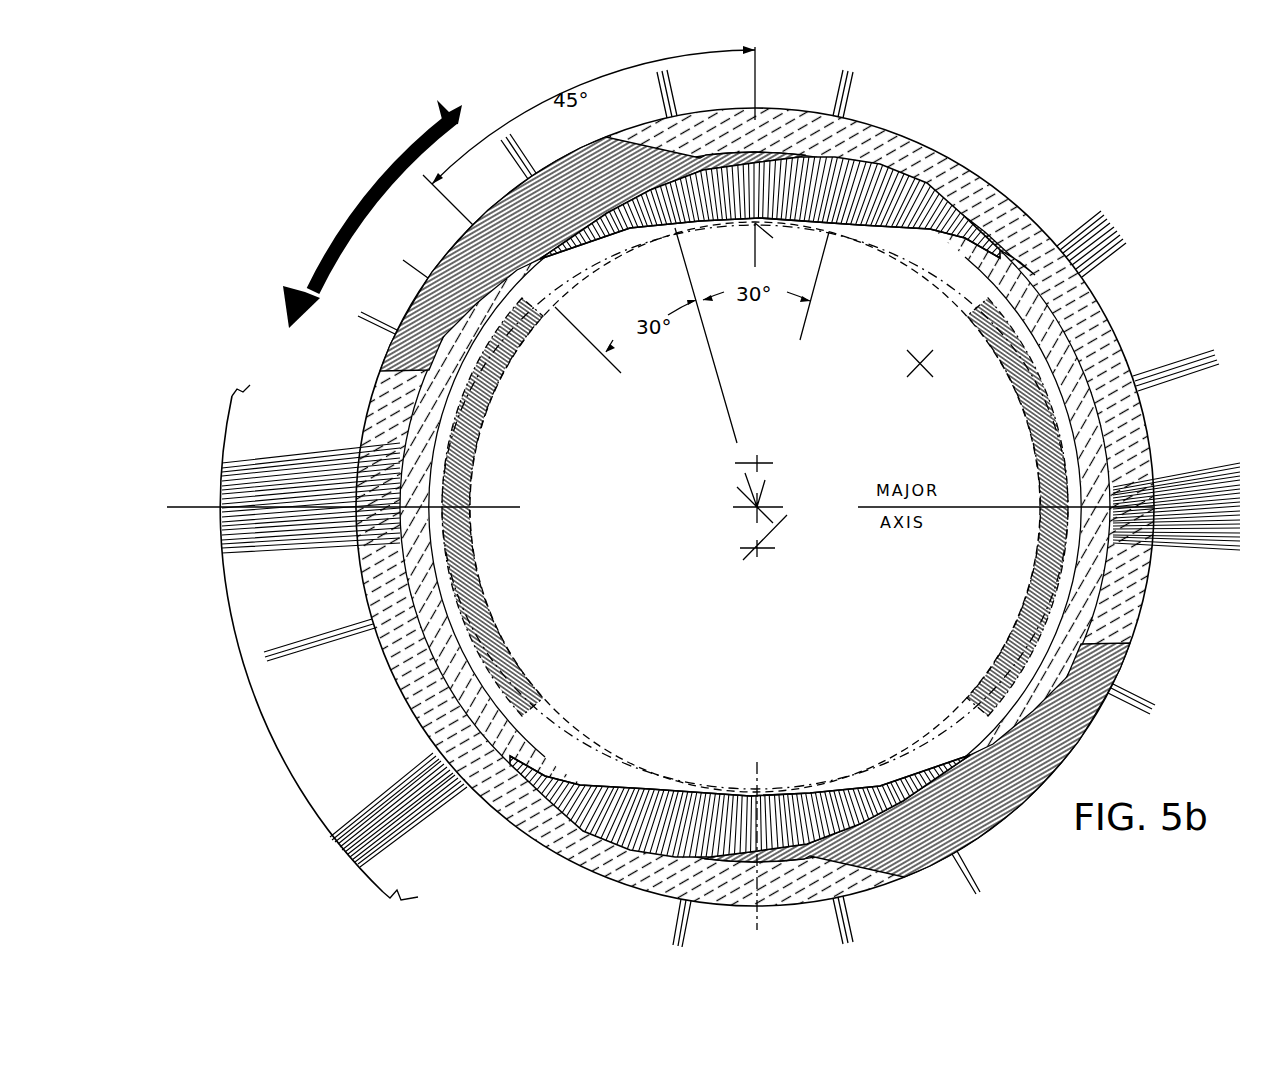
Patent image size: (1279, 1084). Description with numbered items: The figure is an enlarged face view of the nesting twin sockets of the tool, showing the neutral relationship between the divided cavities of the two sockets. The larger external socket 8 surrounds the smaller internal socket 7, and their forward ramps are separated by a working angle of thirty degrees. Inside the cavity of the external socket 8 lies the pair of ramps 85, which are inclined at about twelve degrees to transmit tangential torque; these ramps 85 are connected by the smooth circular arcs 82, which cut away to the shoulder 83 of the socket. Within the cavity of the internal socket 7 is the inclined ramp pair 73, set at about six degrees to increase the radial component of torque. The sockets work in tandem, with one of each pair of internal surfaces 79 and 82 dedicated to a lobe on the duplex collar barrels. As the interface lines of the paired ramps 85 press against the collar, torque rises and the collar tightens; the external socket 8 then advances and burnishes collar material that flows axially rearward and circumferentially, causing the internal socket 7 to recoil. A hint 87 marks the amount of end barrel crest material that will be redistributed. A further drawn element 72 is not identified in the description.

The internal socket 7 is at (490, 742).
The external socket 8 is at (435, 917).
The liner wall 72 is at (958, 247).
The ramps 73 is at (592, 238).
The internal surfaces 79 is at (792, 215).
The circular arcs 82 is at (733, 185).
The shoulder 83 is at (877, 165).
The ramps 85 is at (468, 262).
The hint 87 is at (493, 468).